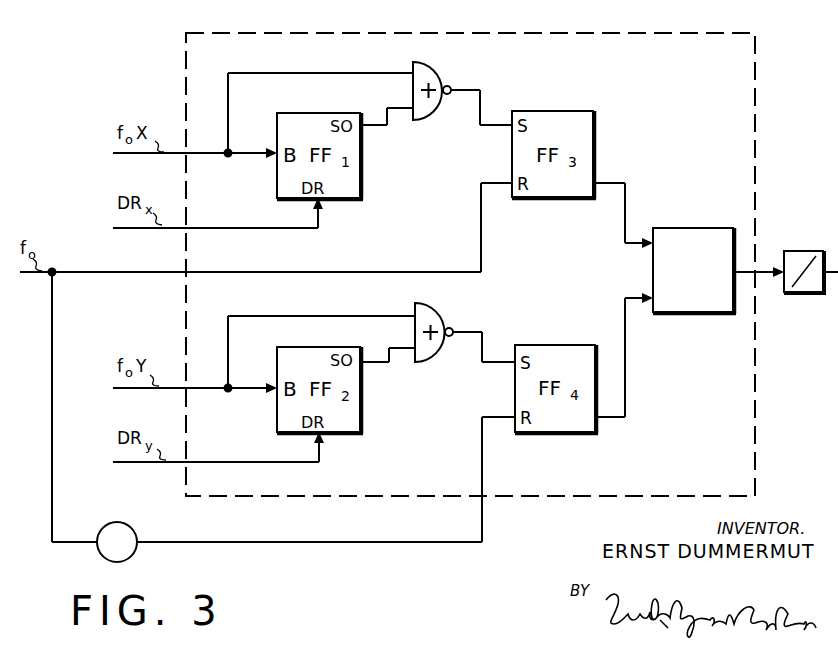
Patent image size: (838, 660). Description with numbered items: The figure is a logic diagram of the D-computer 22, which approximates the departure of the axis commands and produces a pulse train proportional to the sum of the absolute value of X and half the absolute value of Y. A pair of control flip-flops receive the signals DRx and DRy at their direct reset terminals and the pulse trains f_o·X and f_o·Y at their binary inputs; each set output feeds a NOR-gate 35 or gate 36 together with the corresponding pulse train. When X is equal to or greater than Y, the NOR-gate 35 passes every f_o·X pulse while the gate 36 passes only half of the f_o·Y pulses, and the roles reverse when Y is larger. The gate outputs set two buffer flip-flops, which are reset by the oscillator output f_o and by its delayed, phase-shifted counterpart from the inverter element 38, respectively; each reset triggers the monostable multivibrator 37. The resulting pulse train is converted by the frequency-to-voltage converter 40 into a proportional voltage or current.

The D-computer 22 is at (750, 421).
The NOR-gate 35 is at (448, 56).
The gate 36 is at (437, 352).
The monostable multivibrator 37 is at (697, 227).
The inverter element 38 is at (134, 556).
The frequency-to-voltage converter 40 is at (807, 250).